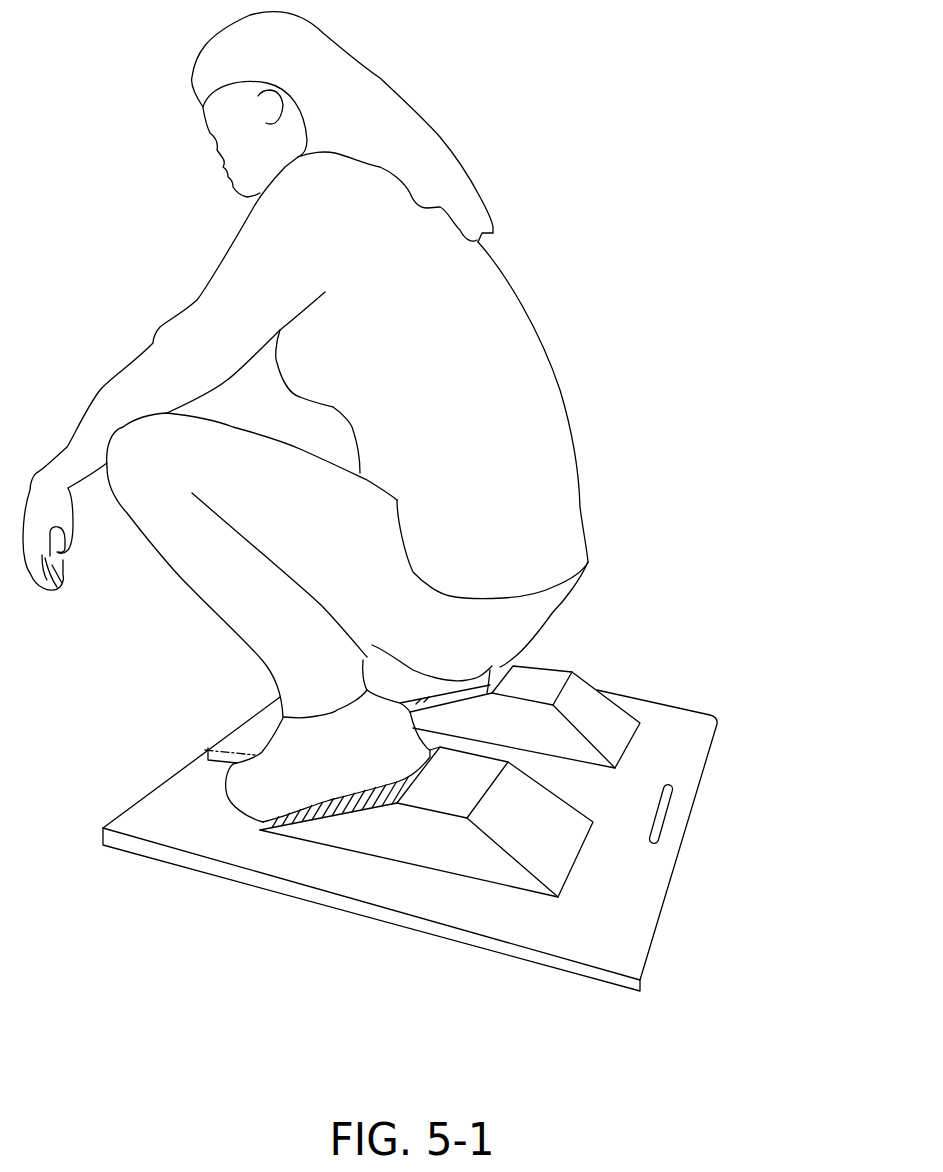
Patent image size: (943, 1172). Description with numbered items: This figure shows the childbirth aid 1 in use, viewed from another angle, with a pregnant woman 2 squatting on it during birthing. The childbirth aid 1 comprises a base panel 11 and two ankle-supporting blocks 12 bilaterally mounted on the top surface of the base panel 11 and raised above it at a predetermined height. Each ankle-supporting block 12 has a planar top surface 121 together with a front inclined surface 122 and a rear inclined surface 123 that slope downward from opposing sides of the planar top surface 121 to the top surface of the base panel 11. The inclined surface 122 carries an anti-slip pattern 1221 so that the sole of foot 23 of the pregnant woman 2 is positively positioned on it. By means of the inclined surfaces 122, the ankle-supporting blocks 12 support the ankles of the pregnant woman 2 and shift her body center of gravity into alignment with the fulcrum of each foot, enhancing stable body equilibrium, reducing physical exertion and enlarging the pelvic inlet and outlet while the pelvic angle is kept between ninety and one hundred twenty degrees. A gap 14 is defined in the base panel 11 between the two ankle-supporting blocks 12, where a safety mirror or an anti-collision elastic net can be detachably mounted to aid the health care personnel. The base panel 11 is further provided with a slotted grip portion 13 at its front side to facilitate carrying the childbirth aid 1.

The childbirth aid 1 is at (443, 761).
The base panel 11 is at (642, 900).
The ankle-supporting block 12 is at (507, 761).
The planar top surface 121 is at (549, 682).
The inclined surface 122 is at (472, 750).
The anti-slip pattern 1221 is at (318, 812).
The rear inclined surface 123 is at (607, 717).
The slotted grip portion 13 is at (662, 820).
The gap 14 is at (267, 720).
The pregnant woman 2 is at (531, 162).
The sole of foot 23 is at (407, 687).